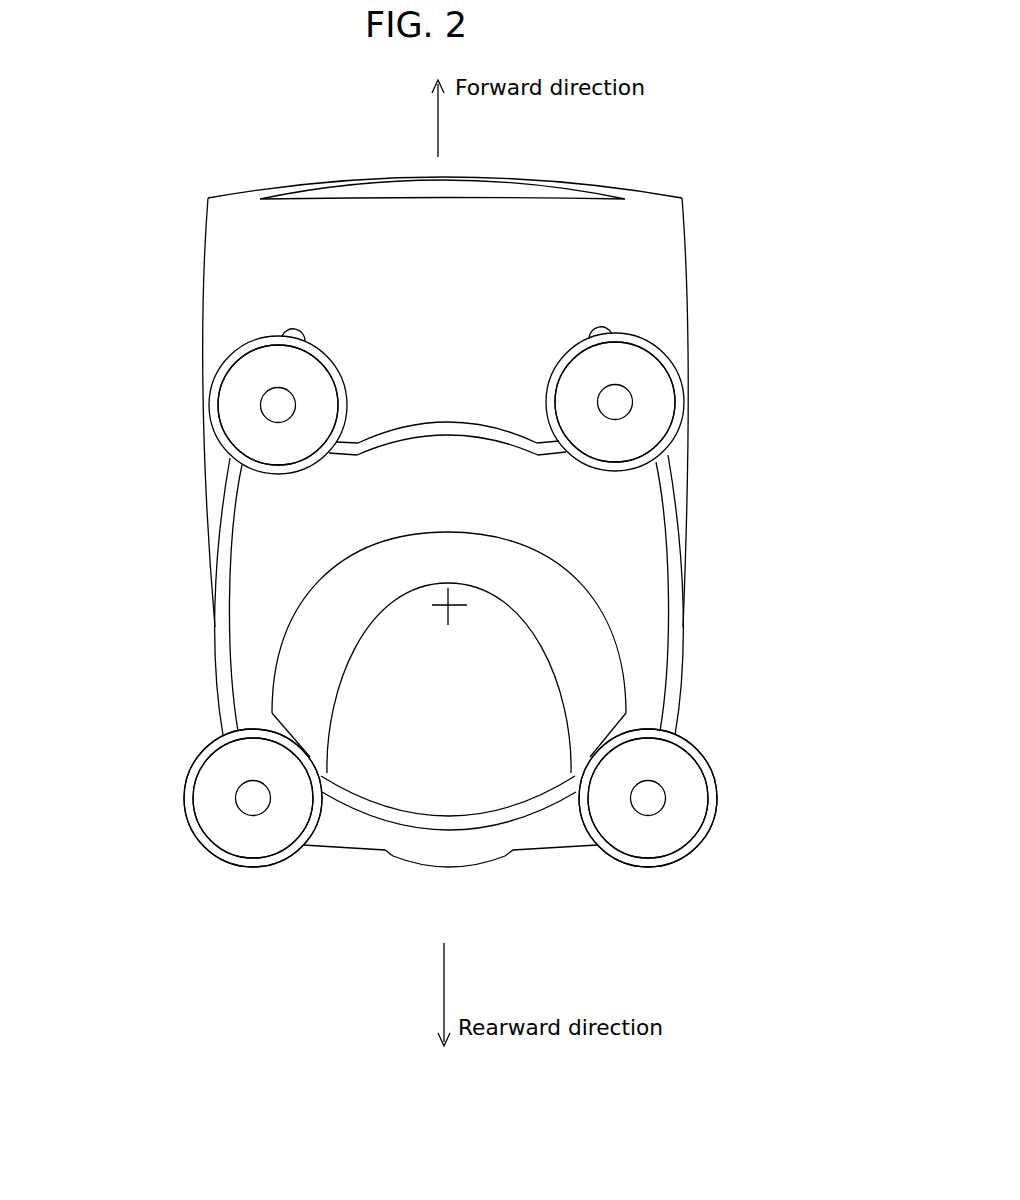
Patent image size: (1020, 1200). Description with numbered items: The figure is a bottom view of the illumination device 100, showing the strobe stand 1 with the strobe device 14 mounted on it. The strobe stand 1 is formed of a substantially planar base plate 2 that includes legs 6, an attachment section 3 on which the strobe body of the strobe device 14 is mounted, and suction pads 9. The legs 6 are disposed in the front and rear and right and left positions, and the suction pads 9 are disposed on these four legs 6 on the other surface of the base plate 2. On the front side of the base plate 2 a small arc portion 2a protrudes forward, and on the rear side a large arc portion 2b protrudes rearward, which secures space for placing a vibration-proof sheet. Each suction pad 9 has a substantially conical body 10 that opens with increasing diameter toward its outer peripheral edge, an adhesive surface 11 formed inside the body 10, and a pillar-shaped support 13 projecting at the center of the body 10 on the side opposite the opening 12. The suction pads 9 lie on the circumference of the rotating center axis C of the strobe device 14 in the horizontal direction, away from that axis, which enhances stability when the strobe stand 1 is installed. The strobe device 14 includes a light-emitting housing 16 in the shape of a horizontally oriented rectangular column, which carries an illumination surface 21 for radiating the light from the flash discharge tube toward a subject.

The electric vehicle 100 is at (170, 110).
The strobe stand 1 is at (188, 535).
The base plate 2 is at (655, 558).
The small arc portion 2a is at (442, 428).
The large arc portion 2b is at (492, 817).
The attachment section 3 is at (430, 777).
The legs 6 is at (225, 593).
The suction pads 9 is at (208, 400).
The body 10 is at (275, 333).
The adhesive surface 11 is at (245, 378).
The opening 12 is at (322, 356).
The support 13 is at (283, 412).
The strobe device 14 is at (687, 240).
The light-emitting housing 16 is at (205, 257).
The illumination surface 21 is at (497, 190).
The rotating center axis C is at (447, 612).